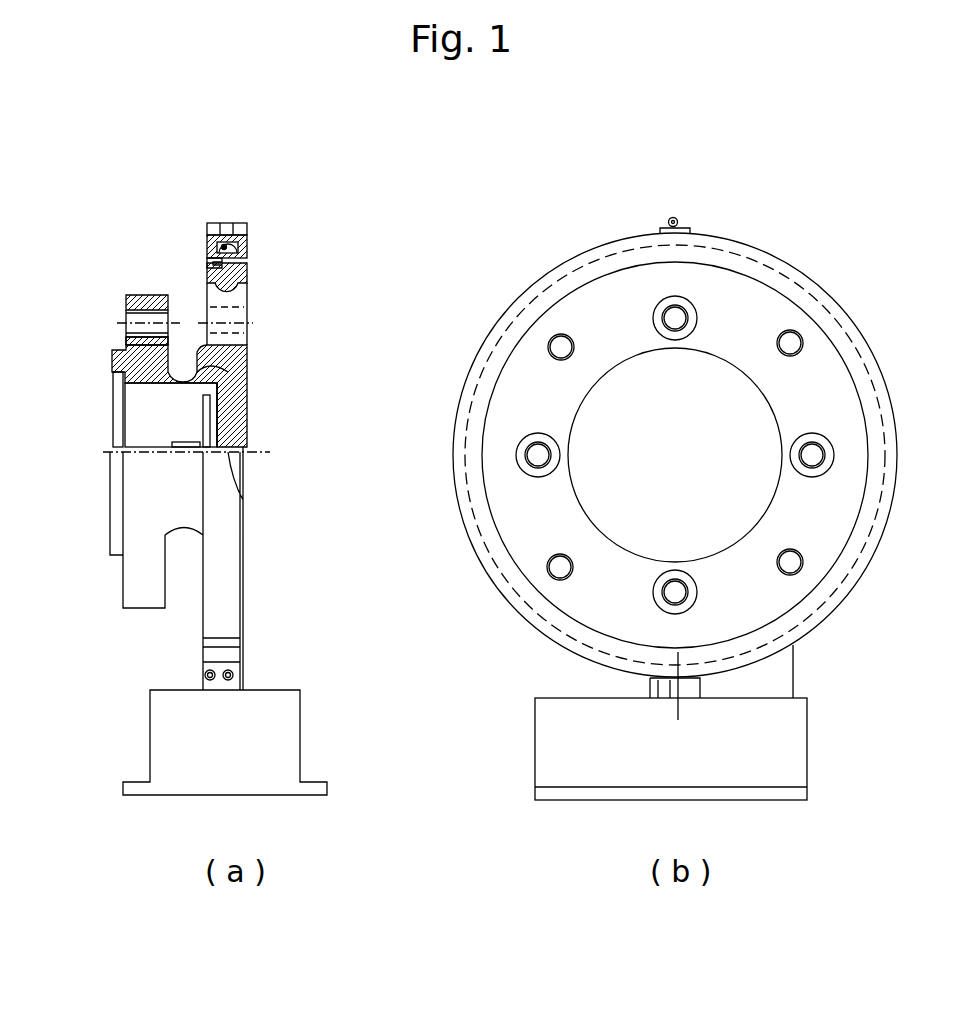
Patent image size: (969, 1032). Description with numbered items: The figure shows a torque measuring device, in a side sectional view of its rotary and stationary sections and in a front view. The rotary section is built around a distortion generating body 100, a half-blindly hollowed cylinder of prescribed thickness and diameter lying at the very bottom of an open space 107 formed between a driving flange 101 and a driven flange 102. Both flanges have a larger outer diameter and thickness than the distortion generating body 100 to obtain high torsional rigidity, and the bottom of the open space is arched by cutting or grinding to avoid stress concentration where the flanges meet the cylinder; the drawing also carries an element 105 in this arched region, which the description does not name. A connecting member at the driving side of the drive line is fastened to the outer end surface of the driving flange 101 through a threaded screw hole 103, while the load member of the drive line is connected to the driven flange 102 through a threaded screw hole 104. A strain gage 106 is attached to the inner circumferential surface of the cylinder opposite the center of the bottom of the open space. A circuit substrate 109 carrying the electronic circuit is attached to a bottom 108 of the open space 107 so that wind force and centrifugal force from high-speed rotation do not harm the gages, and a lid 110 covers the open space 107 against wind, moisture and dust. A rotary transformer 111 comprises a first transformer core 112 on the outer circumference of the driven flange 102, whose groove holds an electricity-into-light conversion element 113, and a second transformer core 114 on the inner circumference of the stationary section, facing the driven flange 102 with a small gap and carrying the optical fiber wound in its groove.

The distortion generating body 100 is at (127, 394).
The driving flange 101 is at (125, 352).
The driven flange 102 is at (245, 295).
The threaded screw hole 103 is at (140, 317).
The threaded screw hole 104 is at (240, 333).
The bearing seat 105 is at (227, 372).
The strain gage 106 is at (232, 407).
The open space 107 is at (148, 422).
The bottom 108 is at (230, 435).
The circuit substrate 109 is at (243, 500).
The lid 110 is at (112, 455).
The rotary transformer 111 is at (248, 268).
The first transformer core 112 is at (247, 278).
The electricity-into-light conversion element 113 is at (207, 260).
The second transformer core 114 is at (248, 240).